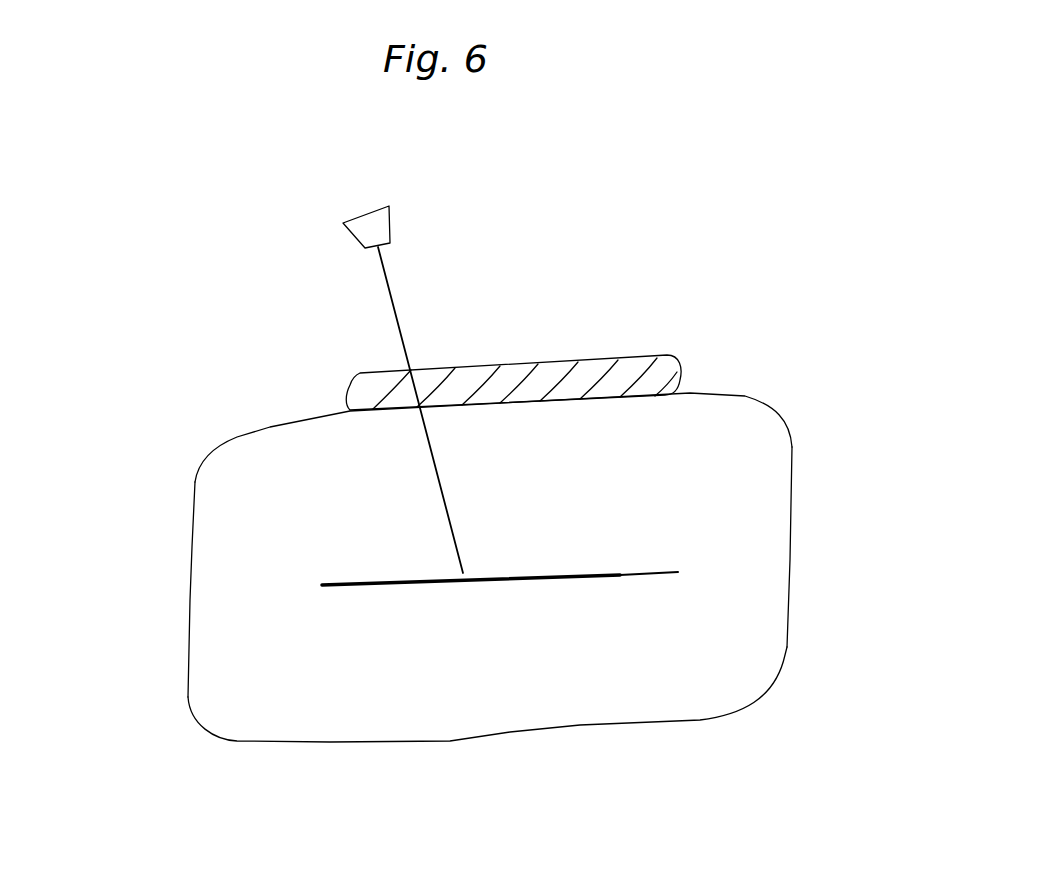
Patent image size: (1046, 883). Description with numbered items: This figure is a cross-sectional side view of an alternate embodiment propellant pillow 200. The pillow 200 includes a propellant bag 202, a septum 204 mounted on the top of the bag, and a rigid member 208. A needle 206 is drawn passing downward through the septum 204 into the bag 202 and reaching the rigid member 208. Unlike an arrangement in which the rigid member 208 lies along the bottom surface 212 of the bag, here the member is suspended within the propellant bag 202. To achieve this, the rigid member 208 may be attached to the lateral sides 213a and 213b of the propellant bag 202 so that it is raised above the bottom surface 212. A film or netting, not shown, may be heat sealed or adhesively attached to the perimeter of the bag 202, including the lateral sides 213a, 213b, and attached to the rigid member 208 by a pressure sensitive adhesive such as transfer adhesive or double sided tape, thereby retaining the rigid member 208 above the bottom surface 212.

The pillow 200 is at (775, 353).
The propellant bag 202 is at (240, 440).
The septum 204 is at (540, 387).
The needle 206 is at (393, 300).
The rigid member 208 is at (623, 576).
The bottom surface 212 is at (328, 742).
The lateral side 213a is at (793, 543).
The lateral side 213b is at (190, 595).